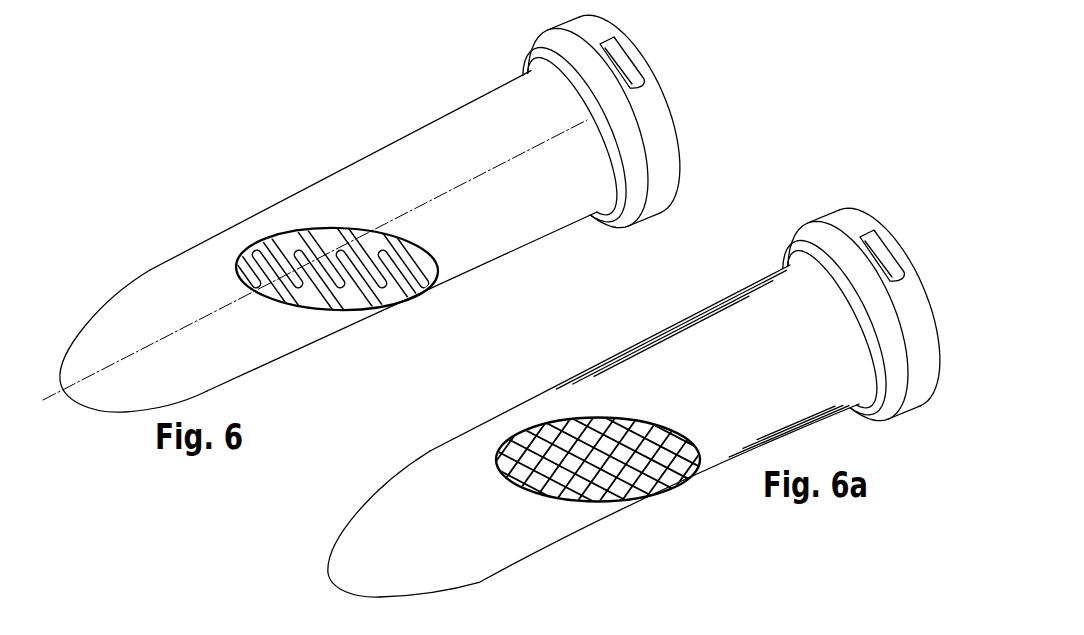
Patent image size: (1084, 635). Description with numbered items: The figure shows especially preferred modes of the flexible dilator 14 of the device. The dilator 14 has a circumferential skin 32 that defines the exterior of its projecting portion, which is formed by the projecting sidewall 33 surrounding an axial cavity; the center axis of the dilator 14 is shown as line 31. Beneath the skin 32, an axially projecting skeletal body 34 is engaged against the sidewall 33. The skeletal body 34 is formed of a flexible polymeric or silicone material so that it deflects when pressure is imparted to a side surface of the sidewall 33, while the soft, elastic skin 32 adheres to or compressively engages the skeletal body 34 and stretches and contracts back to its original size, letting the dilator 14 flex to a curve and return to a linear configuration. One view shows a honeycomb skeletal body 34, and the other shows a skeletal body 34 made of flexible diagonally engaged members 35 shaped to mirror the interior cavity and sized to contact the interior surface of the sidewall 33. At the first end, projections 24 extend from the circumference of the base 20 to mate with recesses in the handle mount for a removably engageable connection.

In FIG. 6, the dilator 14 is at (518, 229).
In FIG. 6A, the dilator 14 is at (570, 405).
In FIG. 6, the base 20 is at (588, 38).
In FIG. 6A, the base 20 is at (845, 219).
In FIG. 6, the projections 24 is at (641, 80).
In FIG. 6A, the projections 24 is at (898, 274).
In FIG. 6, the center axis 31 is at (518, 155).
In FIG. 6, the circumferential skin 32 is at (247, 257).
In FIG. 6, the projecting sidewall 33 is at (352, 230).
In FIG. 6A, the projecting sidewall 33 is at (653, 417).
In FIG. 6, the skeletal body 34 is at (320, 235).
In FIG. 6A, the diagonally engaged members 35 is at (678, 493).